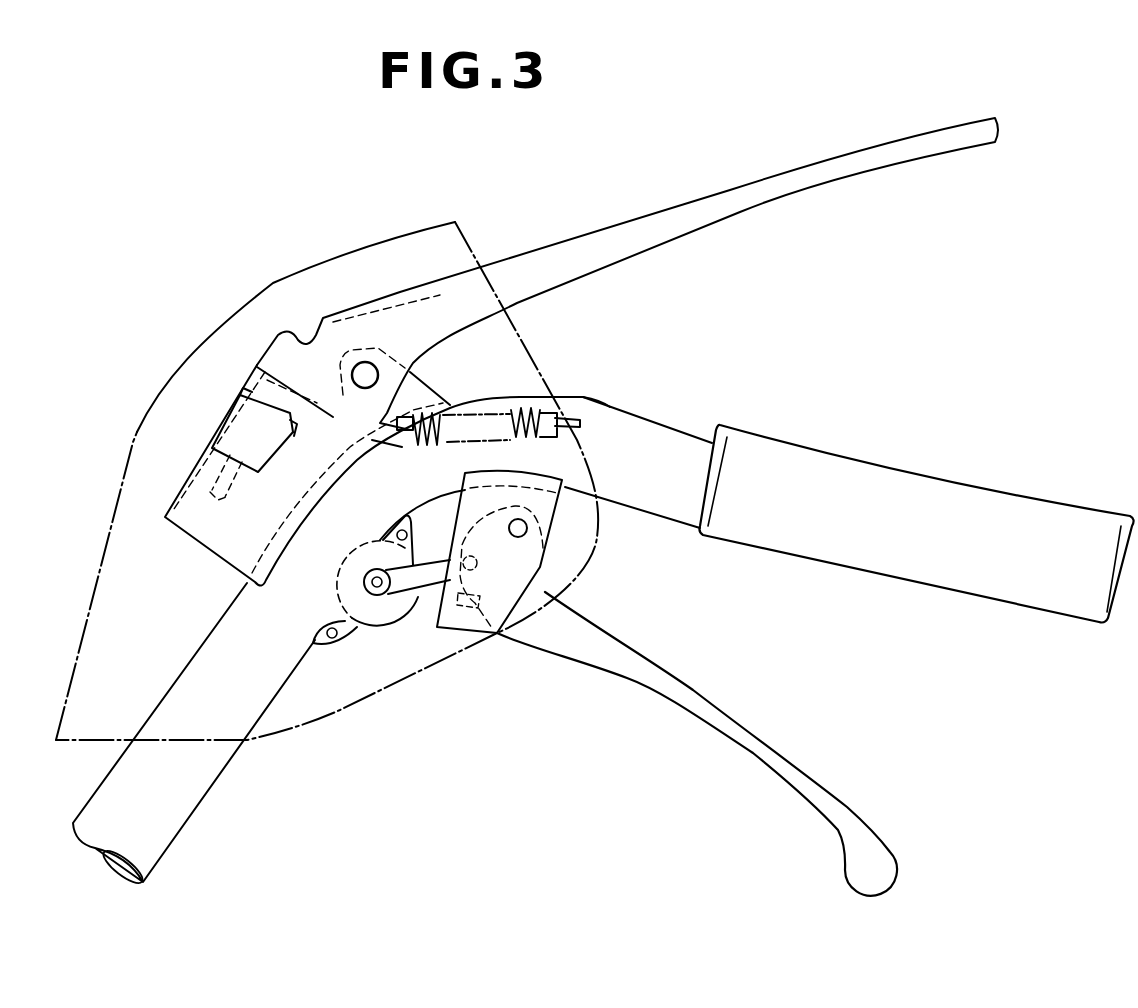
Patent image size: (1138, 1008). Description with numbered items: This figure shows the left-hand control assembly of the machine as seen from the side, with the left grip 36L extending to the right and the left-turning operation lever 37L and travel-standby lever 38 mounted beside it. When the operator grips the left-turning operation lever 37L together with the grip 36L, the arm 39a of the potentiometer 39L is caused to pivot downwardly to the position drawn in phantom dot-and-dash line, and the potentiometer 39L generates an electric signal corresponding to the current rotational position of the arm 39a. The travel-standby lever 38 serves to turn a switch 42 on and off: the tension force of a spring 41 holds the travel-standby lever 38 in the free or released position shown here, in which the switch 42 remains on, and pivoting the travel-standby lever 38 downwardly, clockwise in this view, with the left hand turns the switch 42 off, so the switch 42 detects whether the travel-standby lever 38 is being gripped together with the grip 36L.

The left grip 36L is at (970, 507).
The left-turning operation lever 37L is at (752, 757).
The travel-standby lever 38 is at (822, 168).
The potentiometer 39L is at (383, 627).
The arm 39a is at (423, 600).
The spring 41 is at (513, 412).
The switch 42 is at (253, 432).